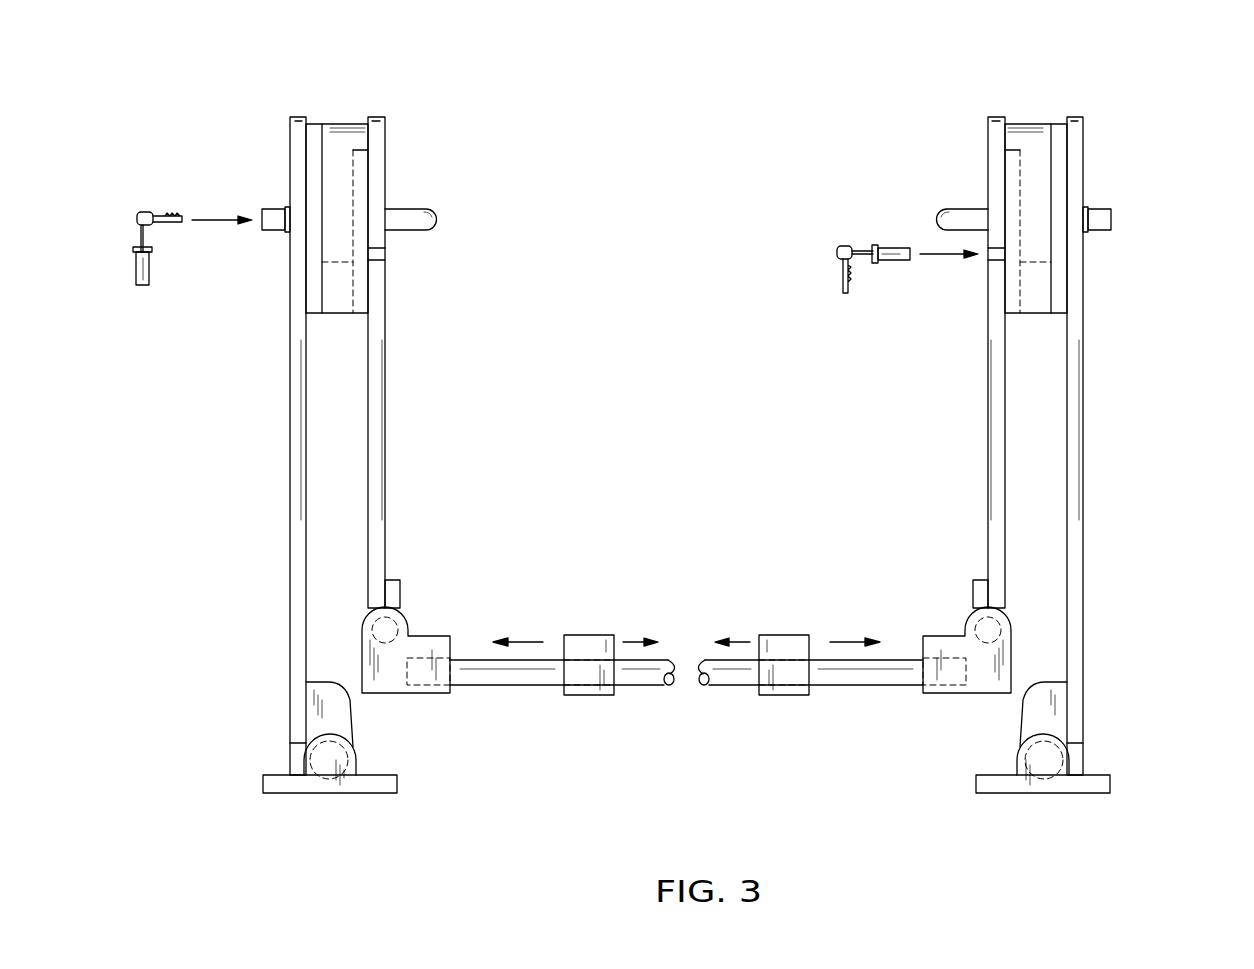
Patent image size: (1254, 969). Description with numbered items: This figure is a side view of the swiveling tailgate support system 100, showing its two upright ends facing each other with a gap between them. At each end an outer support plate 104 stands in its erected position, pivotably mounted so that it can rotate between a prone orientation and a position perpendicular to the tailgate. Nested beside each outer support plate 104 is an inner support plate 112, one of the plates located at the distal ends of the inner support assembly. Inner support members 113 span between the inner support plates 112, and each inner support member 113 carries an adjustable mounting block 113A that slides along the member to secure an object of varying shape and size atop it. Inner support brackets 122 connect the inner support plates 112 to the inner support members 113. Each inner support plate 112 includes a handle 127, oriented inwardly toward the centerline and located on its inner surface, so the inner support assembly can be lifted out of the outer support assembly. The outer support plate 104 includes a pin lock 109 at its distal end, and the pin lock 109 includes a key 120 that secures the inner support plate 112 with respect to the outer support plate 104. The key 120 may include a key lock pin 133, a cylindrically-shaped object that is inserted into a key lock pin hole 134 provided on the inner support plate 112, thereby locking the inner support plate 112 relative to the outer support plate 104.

The swiveling tailgate support system 100 is at (1145, 133).
The outer support plate 104 is at (1083, 519).
The pin lock 109 is at (1113, 220).
The inner support plate 112 is at (385, 462).
The inner support member 113 is at (863, 677).
The adjustable mounting block 113A is at (785, 636).
The key 120 is at (150, 212).
The inner support bracket 122 is at (953, 693).
The handle 127 is at (960, 212).
The key lock pin 133 is at (888, 250).
The key lock pin hole 134 is at (995, 262).